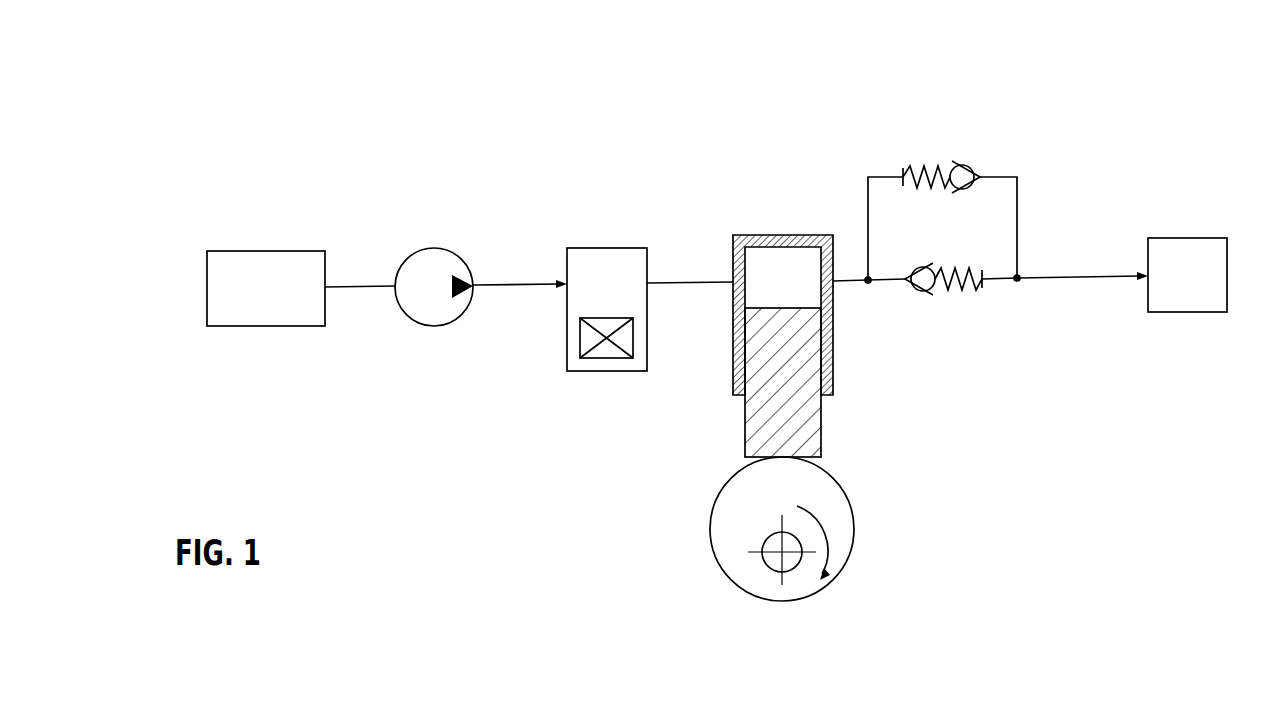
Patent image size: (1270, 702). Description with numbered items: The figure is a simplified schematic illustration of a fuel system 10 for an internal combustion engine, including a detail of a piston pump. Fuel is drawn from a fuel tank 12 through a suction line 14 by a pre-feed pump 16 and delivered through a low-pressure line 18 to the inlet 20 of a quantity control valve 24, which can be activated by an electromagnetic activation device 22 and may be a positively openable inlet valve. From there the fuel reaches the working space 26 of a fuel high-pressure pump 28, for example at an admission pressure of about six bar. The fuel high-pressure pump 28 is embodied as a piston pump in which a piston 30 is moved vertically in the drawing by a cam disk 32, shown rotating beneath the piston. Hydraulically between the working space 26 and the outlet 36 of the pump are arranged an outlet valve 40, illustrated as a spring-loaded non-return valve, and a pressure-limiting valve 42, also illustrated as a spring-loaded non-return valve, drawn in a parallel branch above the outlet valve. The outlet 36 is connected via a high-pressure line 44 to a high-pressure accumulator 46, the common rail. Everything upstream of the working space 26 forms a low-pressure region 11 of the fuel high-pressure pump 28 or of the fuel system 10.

The fuel system 10 is at (346, 72).
The low-pressure region 11 is at (369, 370).
The fuel tank 12 is at (264, 272).
The suction line 14 is at (355, 285).
The pre-feed pump 16 is at (432, 272).
The low-pressure line 18 is at (497, 281).
The inlet 20 is at (555, 264).
The electromagnetic activation device 22 is at (582, 337).
The quantity control valve 24 is at (603, 265).
The working space 26 is at (783, 280).
The fuel high-pressure pump 28 is at (738, 117).
The piston 30 is at (787, 420).
The cam disk 32 is at (833, 510).
The outlet 36 is at (1037, 260).
The outlet valve 40 is at (926, 292).
The pressure-limiting valve 42 is at (958, 163).
The high-pressure line 44 is at (1102, 282).
The high-pressure accumulator 46 is at (1188, 262).